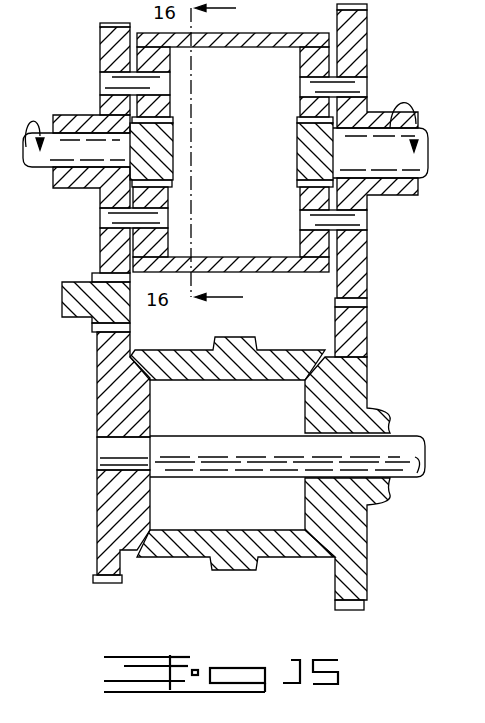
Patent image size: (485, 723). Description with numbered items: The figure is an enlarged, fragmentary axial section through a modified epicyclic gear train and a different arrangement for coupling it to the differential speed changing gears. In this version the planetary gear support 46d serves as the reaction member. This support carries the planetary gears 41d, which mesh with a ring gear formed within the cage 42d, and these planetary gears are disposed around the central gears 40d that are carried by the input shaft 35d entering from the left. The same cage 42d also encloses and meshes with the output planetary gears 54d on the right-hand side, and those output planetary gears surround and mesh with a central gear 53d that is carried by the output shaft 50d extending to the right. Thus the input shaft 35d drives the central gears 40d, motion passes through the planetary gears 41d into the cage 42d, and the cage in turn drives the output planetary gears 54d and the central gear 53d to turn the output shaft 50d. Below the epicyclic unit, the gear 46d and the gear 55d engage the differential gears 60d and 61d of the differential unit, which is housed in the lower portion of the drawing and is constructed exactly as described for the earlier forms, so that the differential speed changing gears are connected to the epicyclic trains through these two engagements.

The input shaft 35d is at (41, 169).
The central gears 40d is at (171, 137).
The planetary gears 41d is at (167, 68).
The cage 42d is at (271, 33).
The planetary gear support 46d is at (105, 40).
The output shaft 50d is at (389, 160).
The central gear 53d is at (300, 142).
The output planetary gears 54d is at (304, 202).
The gear 55d is at (362, 30).
The differential gear 60d is at (101, 394).
The differential gear 61d is at (356, 368).